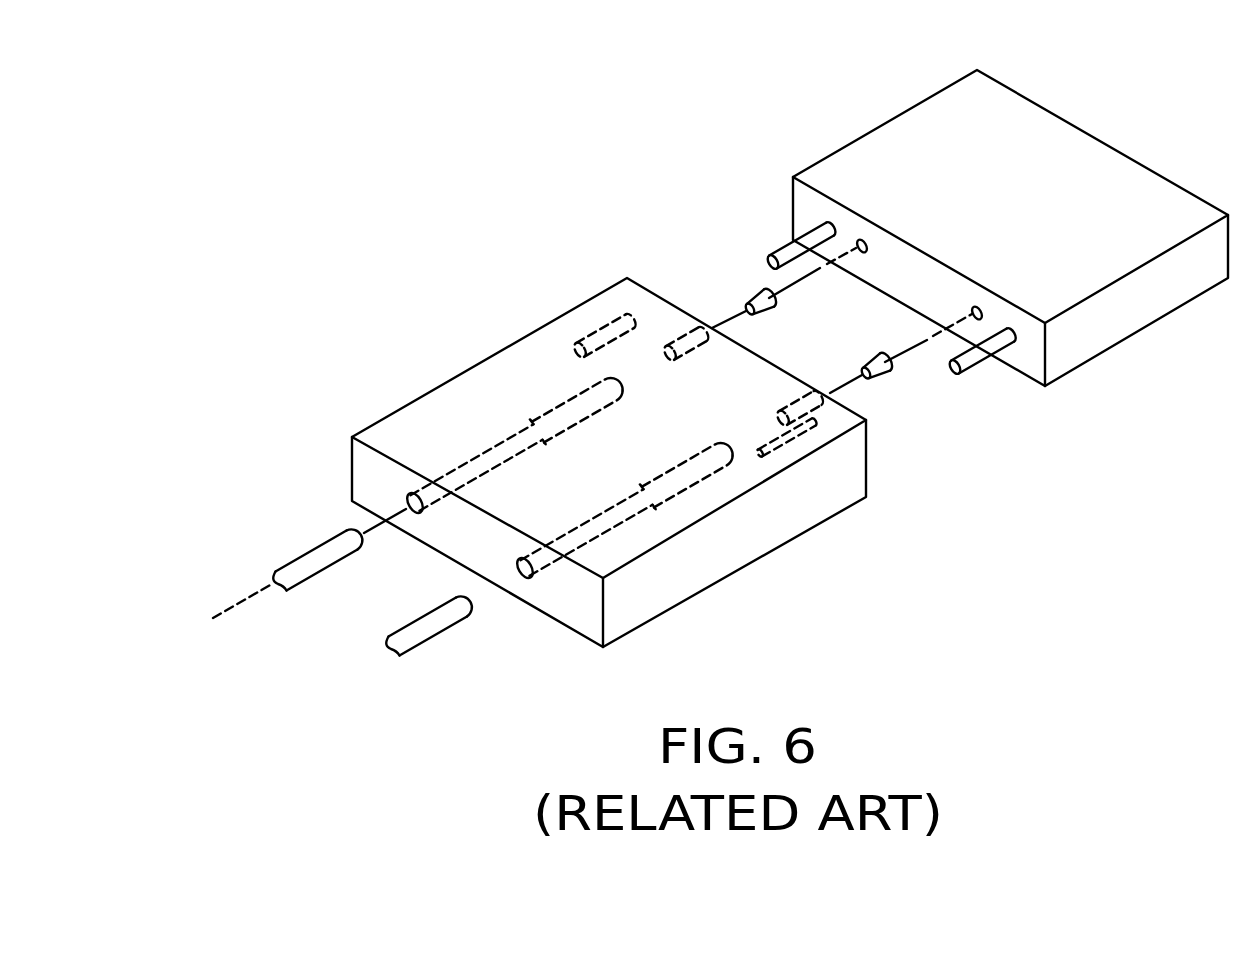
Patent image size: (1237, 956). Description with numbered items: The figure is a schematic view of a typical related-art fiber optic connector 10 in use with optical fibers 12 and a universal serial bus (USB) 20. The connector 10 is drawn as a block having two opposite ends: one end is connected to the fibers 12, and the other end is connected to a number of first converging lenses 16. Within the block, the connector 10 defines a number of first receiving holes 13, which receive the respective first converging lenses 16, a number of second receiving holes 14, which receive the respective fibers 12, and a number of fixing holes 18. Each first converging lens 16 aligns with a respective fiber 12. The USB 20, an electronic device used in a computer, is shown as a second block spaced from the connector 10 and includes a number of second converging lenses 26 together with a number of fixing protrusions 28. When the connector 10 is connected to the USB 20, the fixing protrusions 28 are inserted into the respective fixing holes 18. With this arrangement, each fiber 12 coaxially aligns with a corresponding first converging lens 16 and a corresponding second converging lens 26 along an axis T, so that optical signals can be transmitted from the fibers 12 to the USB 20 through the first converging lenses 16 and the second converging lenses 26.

The fiber optic connector 10 is at (418, 363).
The optical fibers 12 is at (418, 633).
The first receiving holes 13 is at (840, 402).
The second receiving holes 14 is at (533, 580).
The first converging lenses 16 is at (758, 295).
The fixing holes 18 is at (597, 337).
The universal serial bus (USB) 20 is at (857, 68).
The second converging lenses 26 is at (858, 248).
The fixing protrusions 28 is at (788, 252).
The axis T is at (235, 607).